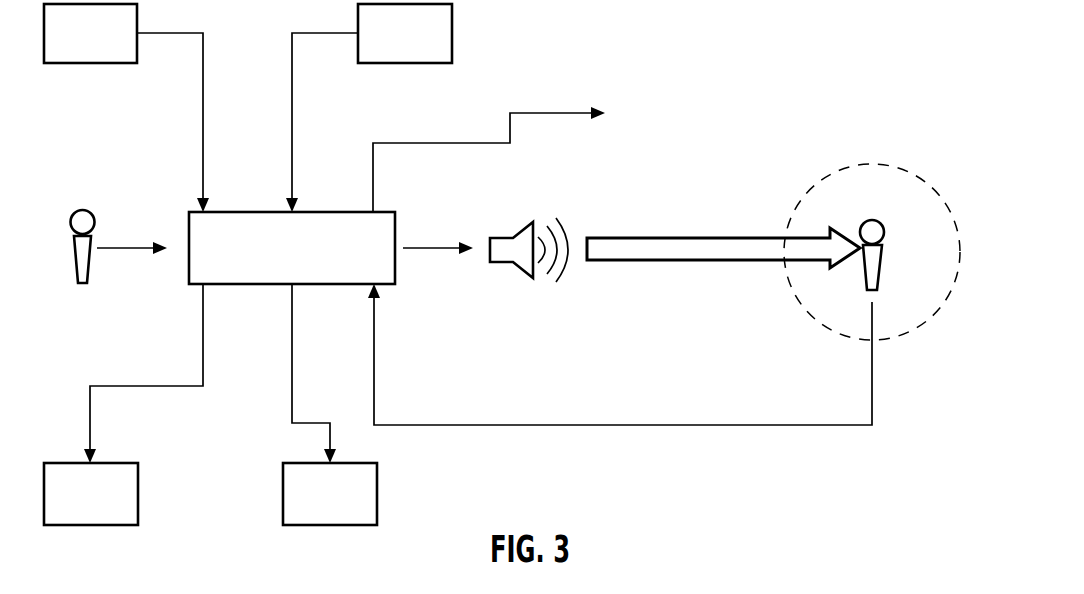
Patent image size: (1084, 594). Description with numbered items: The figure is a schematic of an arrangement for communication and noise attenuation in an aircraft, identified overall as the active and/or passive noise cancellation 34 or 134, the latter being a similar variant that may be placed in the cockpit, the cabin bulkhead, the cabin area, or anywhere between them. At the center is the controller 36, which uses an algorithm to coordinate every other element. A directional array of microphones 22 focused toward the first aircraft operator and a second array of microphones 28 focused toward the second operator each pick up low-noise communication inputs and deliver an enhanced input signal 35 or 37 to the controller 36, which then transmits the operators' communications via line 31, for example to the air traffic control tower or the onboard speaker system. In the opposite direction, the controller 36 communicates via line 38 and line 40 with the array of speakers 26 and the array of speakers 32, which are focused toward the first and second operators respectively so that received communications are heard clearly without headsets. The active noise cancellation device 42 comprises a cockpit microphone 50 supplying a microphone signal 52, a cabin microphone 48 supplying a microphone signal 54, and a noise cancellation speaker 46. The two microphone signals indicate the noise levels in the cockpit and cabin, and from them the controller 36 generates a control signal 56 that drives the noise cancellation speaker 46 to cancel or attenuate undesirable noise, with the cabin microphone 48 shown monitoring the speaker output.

The array of microphones 22 is at (77, 49).
The array of speakers 26 is at (77, 510).
The array of microphones 28 is at (391, 49).
The line 31 is at (442, 143).
The array of speakers 32 is at (316, 510).
The active and/or passive noise cancellation 34 is at (711, 37).
The active and/or passive noise cancellation 134 is at (711, 37).
The enhanced input signal 35 is at (203, 123).
The controller 36 is at (240, 212).
The enhanced input signal 37 is at (293, 123).
The line 38 is at (203, 357).
The line 40 is at (292, 400).
The active noise cancellation device 42 is at (484, 214).
The noise cancellation speaker 46 is at (530, 281).
The cabin microphone 48 is at (880, 263).
The cockpit microphone 50 is at (90, 268).
The microphone signal 52 is at (122, 243).
The microphone signal 54 is at (381, 384).
The control signal 56 is at (440, 250).